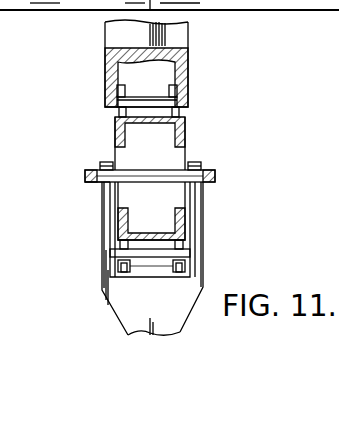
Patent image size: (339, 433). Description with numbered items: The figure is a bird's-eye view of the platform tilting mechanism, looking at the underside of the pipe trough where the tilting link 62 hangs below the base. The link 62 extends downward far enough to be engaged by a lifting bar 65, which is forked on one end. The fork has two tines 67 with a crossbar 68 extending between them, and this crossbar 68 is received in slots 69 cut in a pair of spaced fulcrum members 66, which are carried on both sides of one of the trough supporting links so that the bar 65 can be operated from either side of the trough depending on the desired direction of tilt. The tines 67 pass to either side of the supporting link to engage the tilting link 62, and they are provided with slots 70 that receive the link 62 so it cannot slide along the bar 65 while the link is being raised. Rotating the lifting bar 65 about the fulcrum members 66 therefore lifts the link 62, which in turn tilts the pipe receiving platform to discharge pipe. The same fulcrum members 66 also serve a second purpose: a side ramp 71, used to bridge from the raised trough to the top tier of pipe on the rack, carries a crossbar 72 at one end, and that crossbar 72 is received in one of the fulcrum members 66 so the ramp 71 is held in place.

The link 62 is at (153, 176).
The lifting bar 65 is at (115, 305).
The fulcrum members 66 is at (168, 85).
The tines 67 is at (188, 216).
The crossbar 68 is at (172, 262).
The slots 69 is at (182, 248).
The slots 70 is at (97, 182).
The side ramps 71 is at (186, 40).
The crossbar 72 is at (172, 132).